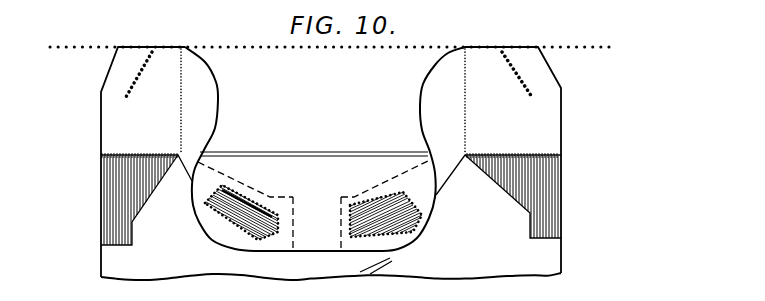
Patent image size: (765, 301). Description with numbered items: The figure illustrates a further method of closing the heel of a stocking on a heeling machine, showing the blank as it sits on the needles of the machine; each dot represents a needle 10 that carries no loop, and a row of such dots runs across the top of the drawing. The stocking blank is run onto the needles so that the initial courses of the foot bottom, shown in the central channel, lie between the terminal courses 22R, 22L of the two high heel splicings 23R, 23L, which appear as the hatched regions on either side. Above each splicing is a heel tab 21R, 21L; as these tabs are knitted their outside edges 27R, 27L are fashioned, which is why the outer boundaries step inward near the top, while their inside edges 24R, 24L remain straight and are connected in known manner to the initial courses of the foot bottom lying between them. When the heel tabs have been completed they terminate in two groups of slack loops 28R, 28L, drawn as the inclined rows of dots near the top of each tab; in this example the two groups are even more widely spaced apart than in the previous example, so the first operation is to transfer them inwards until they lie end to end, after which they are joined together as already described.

The needle 10 is at (608, 49).
The left heel tab 21L is at (118, 120).
The right heel tab 21R is at (543, 138).
The terminal course of left high heel splicing 22L is at (128, 152).
The terminal course of right high heel splicing 22R is at (562, 155).
The left high heel splicing 23L is at (122, 188).
The right high heel splicing 23R is at (537, 193).
The inside edge of left heel tab 24L is at (188, 99).
The inside edge of right heel tab 24R is at (457, 103).
The outside edge of left heel tab 27L is at (101, 95).
The outside edge of right heel tab 27R is at (562, 93).
The left group of slack loops 28L is at (145, 47).
The right group of slack loops 28R is at (507, 47).